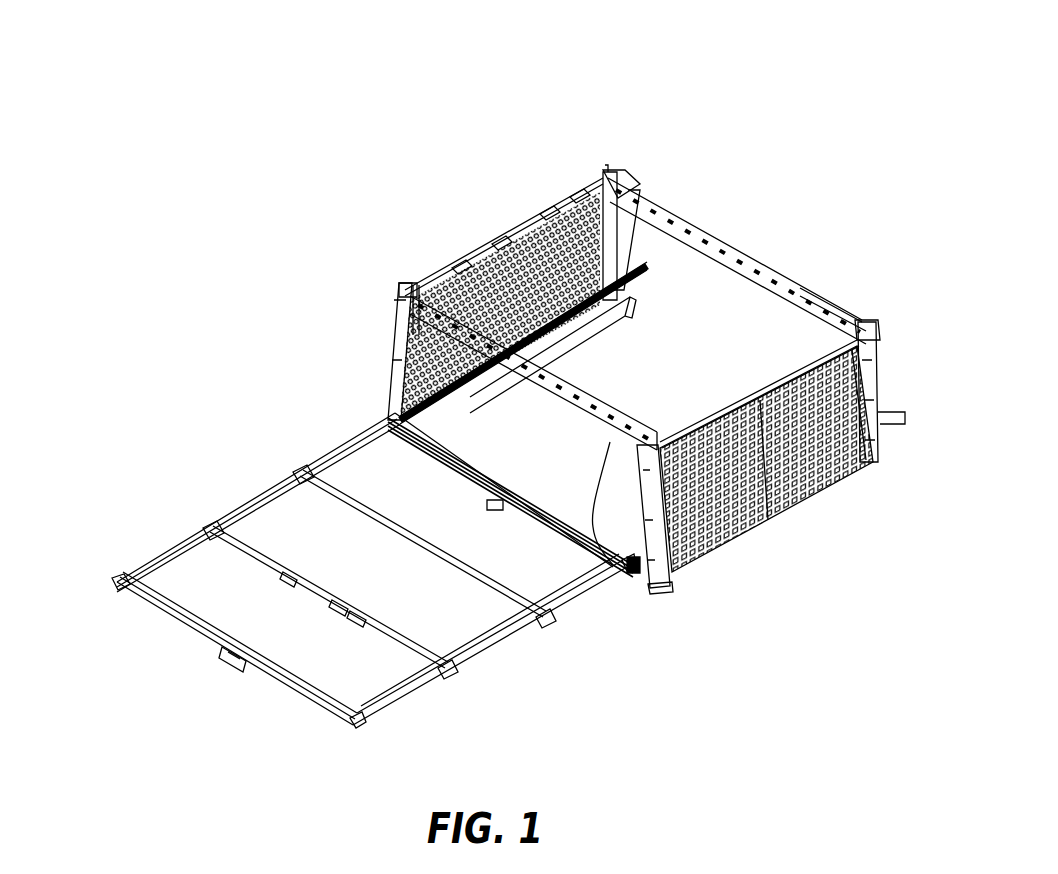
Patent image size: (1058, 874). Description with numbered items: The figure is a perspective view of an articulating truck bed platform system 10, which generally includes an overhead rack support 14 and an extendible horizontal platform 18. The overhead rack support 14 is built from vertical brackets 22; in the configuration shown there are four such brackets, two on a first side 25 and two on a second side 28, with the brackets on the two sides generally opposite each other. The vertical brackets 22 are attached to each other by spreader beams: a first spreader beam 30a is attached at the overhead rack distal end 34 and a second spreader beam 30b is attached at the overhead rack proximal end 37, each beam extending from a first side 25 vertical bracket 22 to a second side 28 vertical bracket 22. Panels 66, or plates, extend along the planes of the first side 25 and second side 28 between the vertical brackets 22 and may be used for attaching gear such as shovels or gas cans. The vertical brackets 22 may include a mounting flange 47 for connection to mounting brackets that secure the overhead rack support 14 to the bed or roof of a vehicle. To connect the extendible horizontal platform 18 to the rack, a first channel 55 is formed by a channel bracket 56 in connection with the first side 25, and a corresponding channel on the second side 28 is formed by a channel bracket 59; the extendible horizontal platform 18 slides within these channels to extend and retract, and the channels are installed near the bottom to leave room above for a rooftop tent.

The articulating truck bed platform system 10 is at (366, 88).
The overhead rack support 14 is at (378, 263).
The extendible horizontal platform 18 is at (57, 482).
The vertical brackets 22 is at (633, 183).
The first side 25 is at (522, 218).
The second side 28 is at (836, 499).
The first spreader beam 30a is at (820, 300).
The second spreader beam 30b is at (613, 570).
The overhead rack distal end 34 is at (766, 233).
The overhead rack proximal end 37 is at (408, 322).
The mounting flange 47 is at (657, 587).
The first channel 55 is at (646, 262).
The channel bracket 56 is at (655, 267).
The channel bracket 59 is at (637, 573).
The panels 66 is at (585, 185).